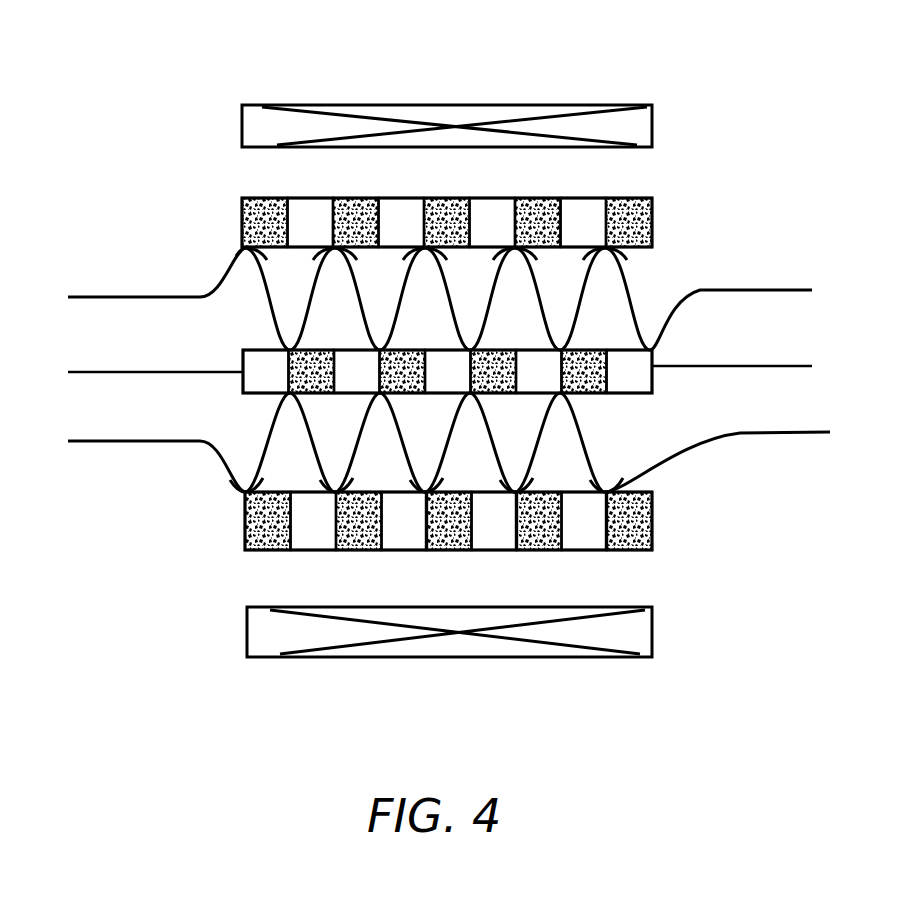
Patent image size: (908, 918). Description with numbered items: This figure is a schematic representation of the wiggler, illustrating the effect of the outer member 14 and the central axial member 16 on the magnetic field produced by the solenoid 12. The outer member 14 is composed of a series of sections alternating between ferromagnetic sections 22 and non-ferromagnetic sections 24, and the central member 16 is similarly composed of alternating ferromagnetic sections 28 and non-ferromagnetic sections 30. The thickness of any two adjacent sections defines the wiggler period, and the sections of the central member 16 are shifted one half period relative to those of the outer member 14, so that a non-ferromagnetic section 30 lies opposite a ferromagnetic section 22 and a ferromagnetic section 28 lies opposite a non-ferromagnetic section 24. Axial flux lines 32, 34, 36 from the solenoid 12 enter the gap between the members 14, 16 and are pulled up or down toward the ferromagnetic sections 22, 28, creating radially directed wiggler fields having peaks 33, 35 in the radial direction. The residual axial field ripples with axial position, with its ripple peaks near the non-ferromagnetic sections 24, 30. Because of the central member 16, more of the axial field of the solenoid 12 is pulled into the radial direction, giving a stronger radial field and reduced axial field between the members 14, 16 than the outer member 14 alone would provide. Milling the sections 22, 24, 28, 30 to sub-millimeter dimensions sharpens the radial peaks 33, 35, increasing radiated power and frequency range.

The solenoid 12 is at (497, 68).
The outer member 14 is at (658, 220).
The central axial member 16 is at (660, 355).
The ferromagnetic section 22 is at (628, 198).
The non-ferromagnetic section 24 is at (581, 198).
The ferromagnetic section 28 is at (592, 349).
The non-ferromagnetic section 30 is at (628, 381).
The axial flux line 32 is at (418, 299).
The radial field peak 33 is at (242, 246).
The axial flux line 34 is at (421, 375).
The radial field peak 35 is at (262, 490).
The axial flux line 36 is at (368, 450).